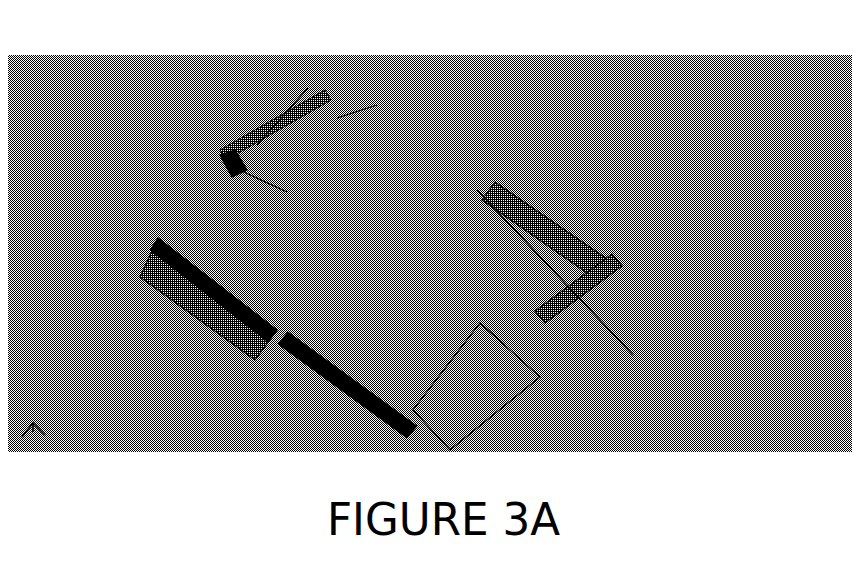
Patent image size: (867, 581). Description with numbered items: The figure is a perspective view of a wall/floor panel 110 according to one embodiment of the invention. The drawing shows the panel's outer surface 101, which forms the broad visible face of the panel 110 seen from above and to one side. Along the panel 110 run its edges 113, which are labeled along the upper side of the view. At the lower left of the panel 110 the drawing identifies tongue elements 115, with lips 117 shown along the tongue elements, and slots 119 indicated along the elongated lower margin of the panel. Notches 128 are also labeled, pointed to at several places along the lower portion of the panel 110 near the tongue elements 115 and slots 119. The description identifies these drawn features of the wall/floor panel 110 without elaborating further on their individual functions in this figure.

The wall/floor panel 110 is at (495, 130).
The outer surface 101 is at (318, 203).
The edges 113 is at (472, 175).
The tongue elements 115 is at (183, 310).
The lips 117 is at (157, 272).
The slots 119 is at (333, 377).
The notches 128 is at (302, 322).